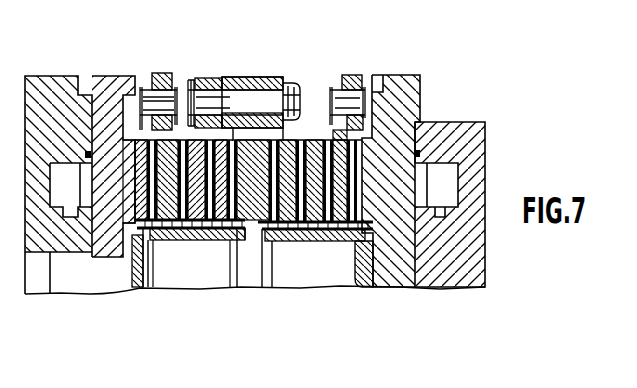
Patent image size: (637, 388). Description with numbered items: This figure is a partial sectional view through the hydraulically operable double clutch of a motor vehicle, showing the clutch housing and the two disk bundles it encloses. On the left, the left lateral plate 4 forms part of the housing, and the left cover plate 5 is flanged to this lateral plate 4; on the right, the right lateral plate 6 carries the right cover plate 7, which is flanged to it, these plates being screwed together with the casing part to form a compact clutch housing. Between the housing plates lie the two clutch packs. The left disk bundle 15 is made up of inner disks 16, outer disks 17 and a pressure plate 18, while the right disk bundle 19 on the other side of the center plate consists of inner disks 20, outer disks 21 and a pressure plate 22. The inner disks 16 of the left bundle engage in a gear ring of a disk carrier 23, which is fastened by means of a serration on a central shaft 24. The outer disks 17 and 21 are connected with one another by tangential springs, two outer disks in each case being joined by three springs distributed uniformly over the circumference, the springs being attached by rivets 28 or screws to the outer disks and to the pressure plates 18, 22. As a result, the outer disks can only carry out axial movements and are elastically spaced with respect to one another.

The left lateral plate 4 is at (118, 80).
The left cover plate 5 is at (43, 88).
The right lateral plate 6 is at (392, 80).
The right cover plate 7 is at (466, 131).
The left disk bundle 15 is at (205, 243).
The inner disks 16 is at (186, 238).
The outer disks 17 is at (215, 143).
The pressure plate 18 is at (133, 155).
The right disk bundle 19 is at (313, 268).
The inner disks 20 is at (328, 239).
The outer disks 21 is at (313, 143).
The pressure plate 22 is at (421, 107).
The disk carrier 23 is at (210, 226).
The central shaft 24 is at (338, 238).
The rivets 28 is at (145, 82).